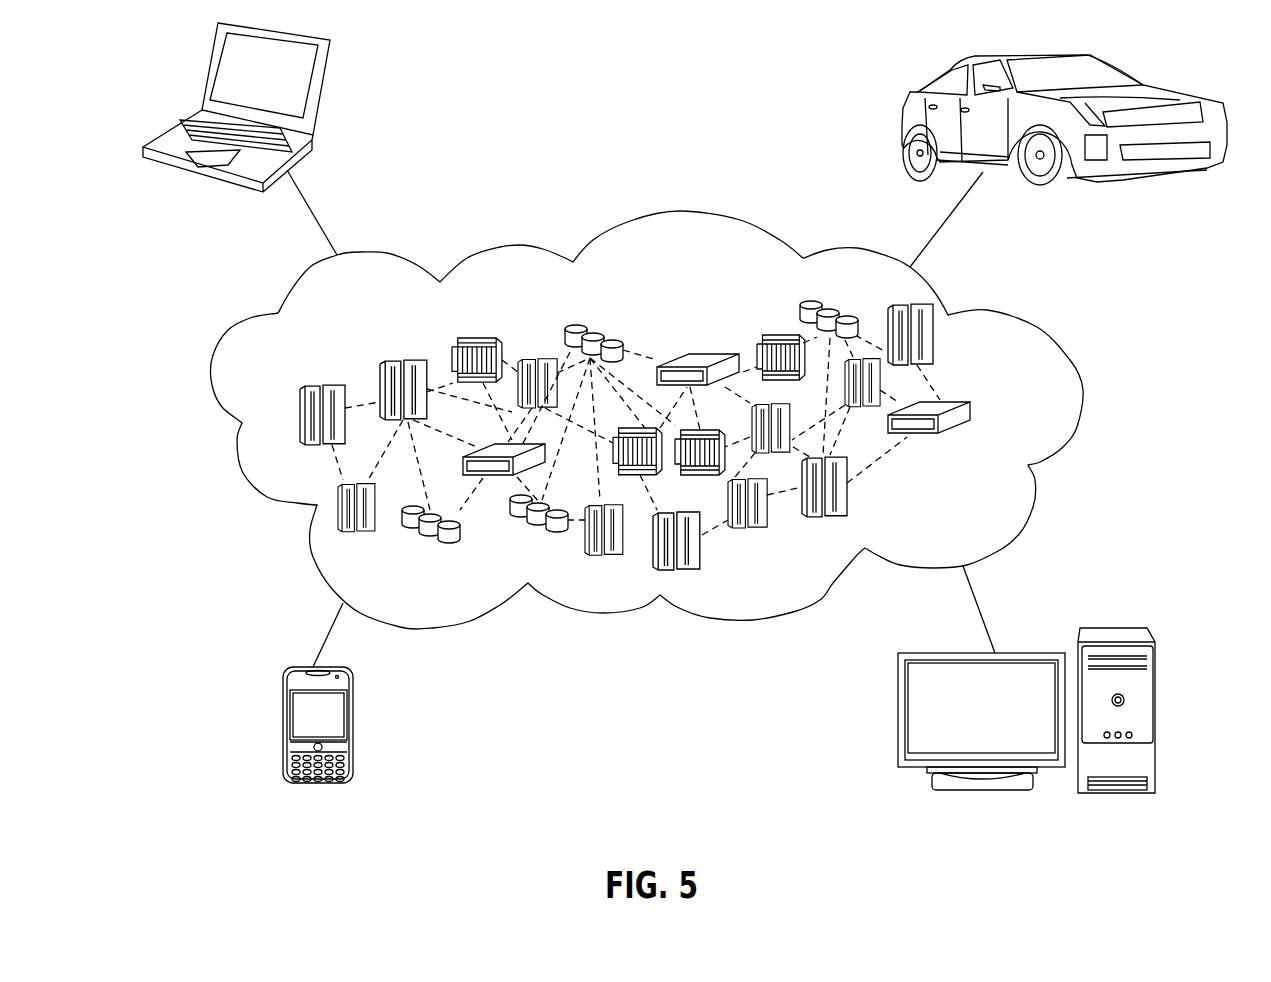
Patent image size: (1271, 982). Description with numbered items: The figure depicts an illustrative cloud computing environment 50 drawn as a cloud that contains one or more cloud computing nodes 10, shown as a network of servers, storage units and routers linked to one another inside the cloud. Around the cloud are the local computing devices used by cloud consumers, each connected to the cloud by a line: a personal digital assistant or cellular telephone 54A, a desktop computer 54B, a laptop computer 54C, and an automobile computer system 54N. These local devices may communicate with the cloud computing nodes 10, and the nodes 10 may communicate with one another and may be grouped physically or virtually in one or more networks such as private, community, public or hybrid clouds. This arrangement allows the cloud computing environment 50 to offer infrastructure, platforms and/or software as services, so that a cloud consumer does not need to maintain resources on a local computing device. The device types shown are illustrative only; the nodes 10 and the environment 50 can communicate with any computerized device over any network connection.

The cloud computing environment 50 is at (1037, 328).
The cloud computing nodes 10 is at (1013, 413).
The personal digital assistant or cellular telephone 54A is at (283, 727).
The desktop computer 54B is at (1120, 627).
The laptop computer 54C is at (323, 92).
The automobile computer system 54N is at (910, 105).